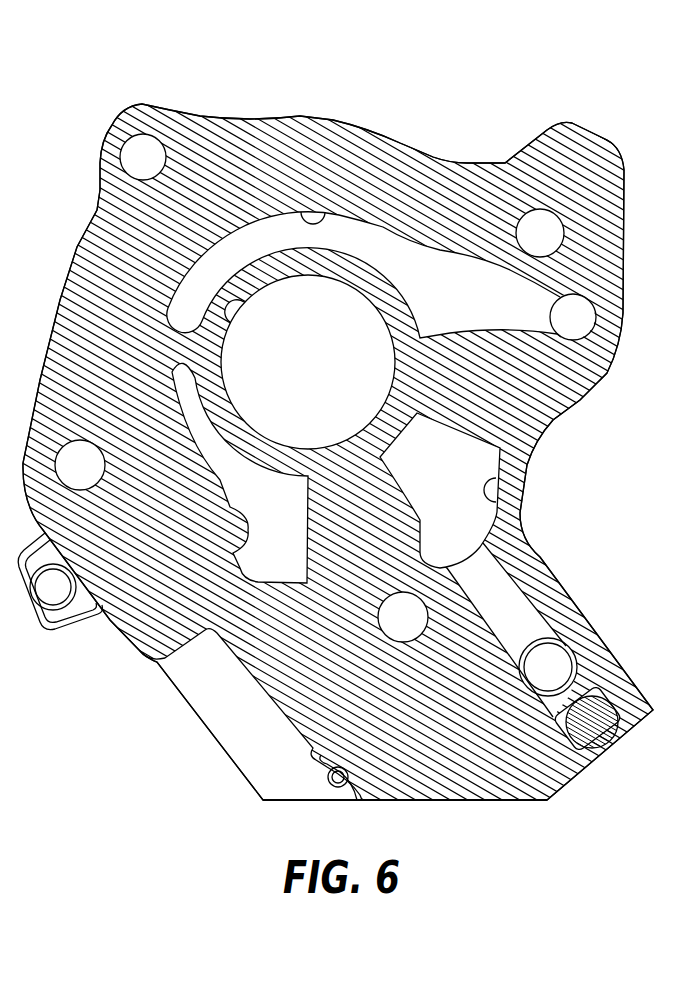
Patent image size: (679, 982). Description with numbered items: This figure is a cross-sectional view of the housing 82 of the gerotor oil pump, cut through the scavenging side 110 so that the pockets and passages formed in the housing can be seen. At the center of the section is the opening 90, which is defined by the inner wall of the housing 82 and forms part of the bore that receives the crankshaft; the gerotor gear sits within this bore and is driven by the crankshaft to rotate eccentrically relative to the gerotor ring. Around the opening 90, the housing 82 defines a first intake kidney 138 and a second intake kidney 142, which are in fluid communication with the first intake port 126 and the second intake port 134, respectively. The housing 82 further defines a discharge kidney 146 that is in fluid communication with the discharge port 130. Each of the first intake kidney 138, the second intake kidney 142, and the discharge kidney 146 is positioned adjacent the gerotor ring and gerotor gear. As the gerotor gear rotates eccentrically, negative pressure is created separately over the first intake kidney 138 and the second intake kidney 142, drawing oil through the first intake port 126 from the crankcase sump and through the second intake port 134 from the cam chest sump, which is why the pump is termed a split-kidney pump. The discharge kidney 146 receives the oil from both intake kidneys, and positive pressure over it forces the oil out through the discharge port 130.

The housing 82 is at (432, 103).
The scavenging side 110 is at (347, 143).
The discharge kidney 146 is at (303, 226).
The opening 90 is at (225, 290).
The discharge port 130 is at (598, 312).
The second intake kidney 142 is at (477, 481).
The first intake kidney 138 is at (150, 620).
The first intake port 126 is at (440, 805).
The second intake port 134 is at (598, 757).